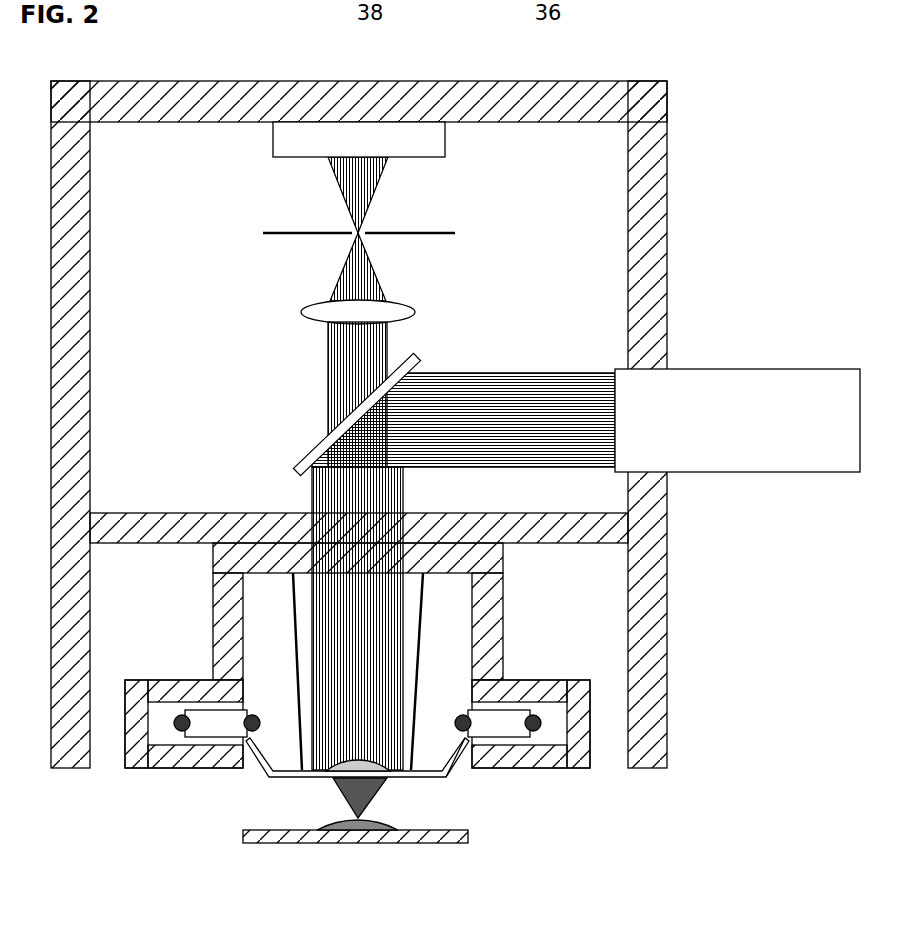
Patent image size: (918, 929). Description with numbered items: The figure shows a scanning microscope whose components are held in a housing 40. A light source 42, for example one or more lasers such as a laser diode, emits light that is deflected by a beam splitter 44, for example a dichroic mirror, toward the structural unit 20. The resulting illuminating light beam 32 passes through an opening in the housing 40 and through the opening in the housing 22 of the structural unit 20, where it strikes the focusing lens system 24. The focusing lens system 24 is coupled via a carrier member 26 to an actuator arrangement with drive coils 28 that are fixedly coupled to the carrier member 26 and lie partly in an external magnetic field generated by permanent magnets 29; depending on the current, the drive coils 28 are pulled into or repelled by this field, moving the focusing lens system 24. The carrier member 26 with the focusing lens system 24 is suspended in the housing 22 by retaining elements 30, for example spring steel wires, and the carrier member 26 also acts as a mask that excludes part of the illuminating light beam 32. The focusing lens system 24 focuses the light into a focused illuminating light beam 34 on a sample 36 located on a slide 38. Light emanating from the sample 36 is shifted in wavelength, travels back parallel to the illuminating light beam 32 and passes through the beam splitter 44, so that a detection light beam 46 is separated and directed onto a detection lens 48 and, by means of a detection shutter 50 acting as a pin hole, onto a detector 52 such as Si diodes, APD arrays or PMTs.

The structural unit 20 is at (212, 557).
The housing 22 is at (507, 588).
The focusing lens system 24 is at (340, 777).
The carrier member 26 is at (452, 772).
The drive coils 28 is at (190, 757).
The permanent magnets 29 is at (193, 686).
The retaining elements 30 is at (297, 660).
The illuminating light beam 32 is at (313, 660).
The focused illuminating light beam 34 is at (378, 792).
The sample 36 is at (387, 847).
The slide 38 is at (358, 845).
The housing 40 is at (667, 232).
The light source 42 is at (725, 426).
The beam splitter 44 is at (325, 437).
The detection light beam 46 is at (393, 348).
The detection lens 48 is at (396, 304).
The detection shutter 50 is at (354, 237).
The detector 52 is at (346, 149).